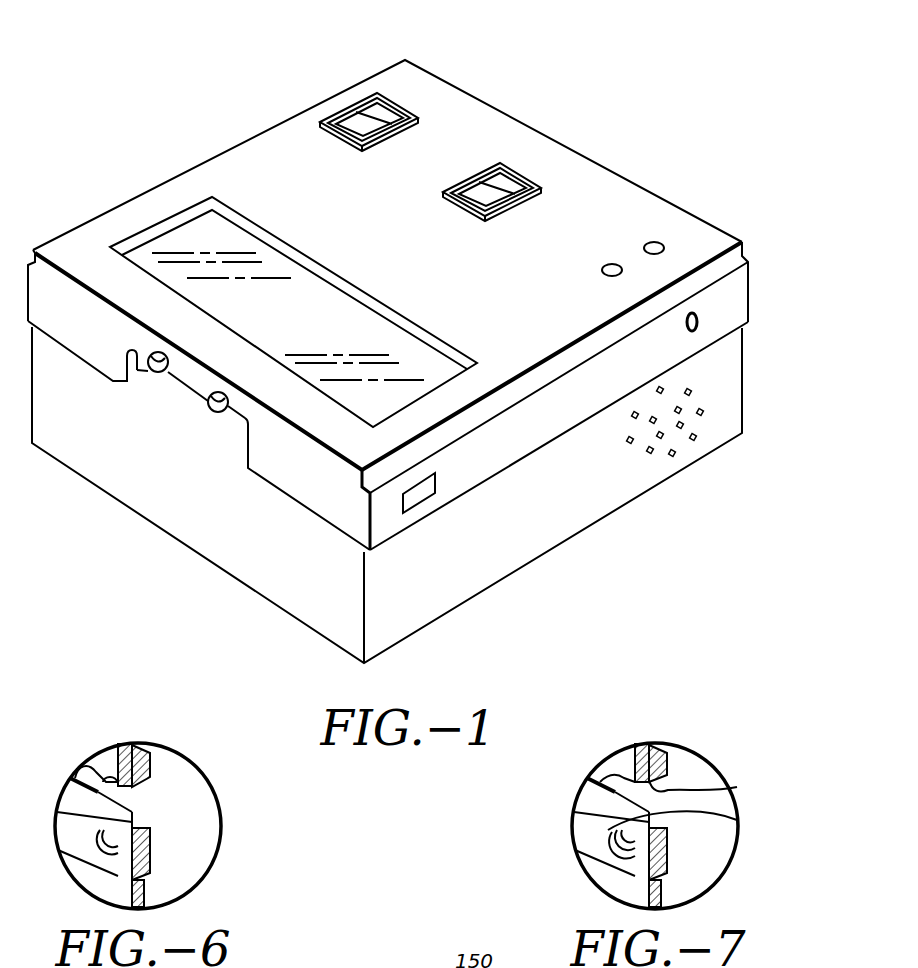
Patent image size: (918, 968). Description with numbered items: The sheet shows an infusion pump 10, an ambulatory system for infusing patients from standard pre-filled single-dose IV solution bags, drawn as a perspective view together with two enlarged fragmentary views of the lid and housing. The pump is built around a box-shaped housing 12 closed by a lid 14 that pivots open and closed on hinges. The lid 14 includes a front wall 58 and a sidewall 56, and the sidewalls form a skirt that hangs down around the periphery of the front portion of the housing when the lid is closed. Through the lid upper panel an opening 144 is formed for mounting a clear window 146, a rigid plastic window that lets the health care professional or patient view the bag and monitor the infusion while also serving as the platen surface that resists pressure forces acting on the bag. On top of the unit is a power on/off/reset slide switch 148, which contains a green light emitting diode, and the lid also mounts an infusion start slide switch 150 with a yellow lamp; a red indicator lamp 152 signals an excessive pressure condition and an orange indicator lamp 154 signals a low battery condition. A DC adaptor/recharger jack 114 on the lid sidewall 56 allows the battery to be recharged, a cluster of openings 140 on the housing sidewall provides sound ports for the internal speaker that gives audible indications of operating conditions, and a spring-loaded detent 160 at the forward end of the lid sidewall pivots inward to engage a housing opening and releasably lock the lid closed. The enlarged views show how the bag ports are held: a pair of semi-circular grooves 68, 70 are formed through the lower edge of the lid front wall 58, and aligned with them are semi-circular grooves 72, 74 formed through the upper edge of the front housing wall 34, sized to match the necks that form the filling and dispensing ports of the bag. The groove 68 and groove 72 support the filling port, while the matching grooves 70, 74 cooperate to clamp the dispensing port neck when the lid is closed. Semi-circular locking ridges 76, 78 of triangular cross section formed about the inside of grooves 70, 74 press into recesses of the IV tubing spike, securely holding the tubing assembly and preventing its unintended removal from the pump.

In FIG. 1, the infusion pump 10 is at (420, 341).
In FIG. 1, the housing 12 is at (422, 472).
In FIG. 1, the lid 14 is at (414, 285).
In FIG. 6, the front housing wall 34 is at (145, 885).
In FIG. 7, the front housing wall 34 is at (661, 887).
In FIG. 1, the sidewall 56 is at (511, 446).
In FIG. 1, the front wall 58 is at (294, 489).
In FIG. 6, the front wall 58 is at (124, 745).
In FIG. 7, the front wall 58 is at (640, 747).
In FIG. 1, the semi-circular groove 68 is at (163, 352).
In FIG. 6, the semi-circular groove 68 is at (85, 763).
In FIG. 1, the semi-circular groove 70 is at (230, 398).
In FIG. 7, the semi-circular groove 70 is at (623, 782).
In FIG. 1, the semi-circular groove 72 is at (155, 373).
In FIG. 6, the semi-circular groove 72 is at (97, 845).
In FIG. 1, the semi-circular groove 74 is at (210, 413).
In FIG. 7, the semi-circular groove 74 is at (613, 855).
In FIG. 7, the locking ridge 76 is at (737, 788).
In FIG. 7, the locking ridge 78 is at (738, 820).
In FIG. 1, the DC adaptor/recharger jack 114 is at (696, 316).
In FIG. 1, the cluster of openings 140 is at (698, 437).
In FIG. 1, the opening 144 is at (178, 222).
In FIG. 1, the clear window 146 is at (262, 272).
In FIG. 1, the power on/off/reset slide switch 148 is at (384, 108).
In FIG. 1, the infusion start slide switch 150 is at (506, 176).
In FIG. 1, the indicator lamp 152 is at (612, 264).
In FIG. 1, the indicator lamp 154 is at (654, 243).
In FIG. 1, the spring-loaded detent 160 is at (415, 493).